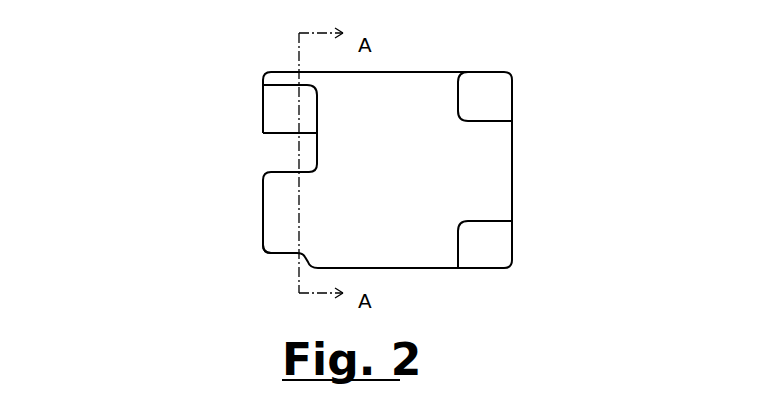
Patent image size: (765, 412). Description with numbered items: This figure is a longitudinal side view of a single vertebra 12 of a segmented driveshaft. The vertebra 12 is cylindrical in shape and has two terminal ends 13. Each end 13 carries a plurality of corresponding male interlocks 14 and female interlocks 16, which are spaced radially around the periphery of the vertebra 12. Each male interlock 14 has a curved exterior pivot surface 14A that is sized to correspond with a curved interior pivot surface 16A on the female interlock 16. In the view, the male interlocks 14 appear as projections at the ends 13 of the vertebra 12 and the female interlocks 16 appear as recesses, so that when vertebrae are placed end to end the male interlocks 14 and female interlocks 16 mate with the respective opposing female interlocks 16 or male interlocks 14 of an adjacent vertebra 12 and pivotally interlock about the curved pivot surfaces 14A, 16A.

The vertebra 12 is at (150, 90).
The terminal end 13 is at (263, 73).
The male interlock 14 is at (283, 206).
The curved exterior pivot surface 14A is at (262, 249).
The female interlock 16 is at (312, 143).
The curved interior pivot surface 16A is at (473, 224).